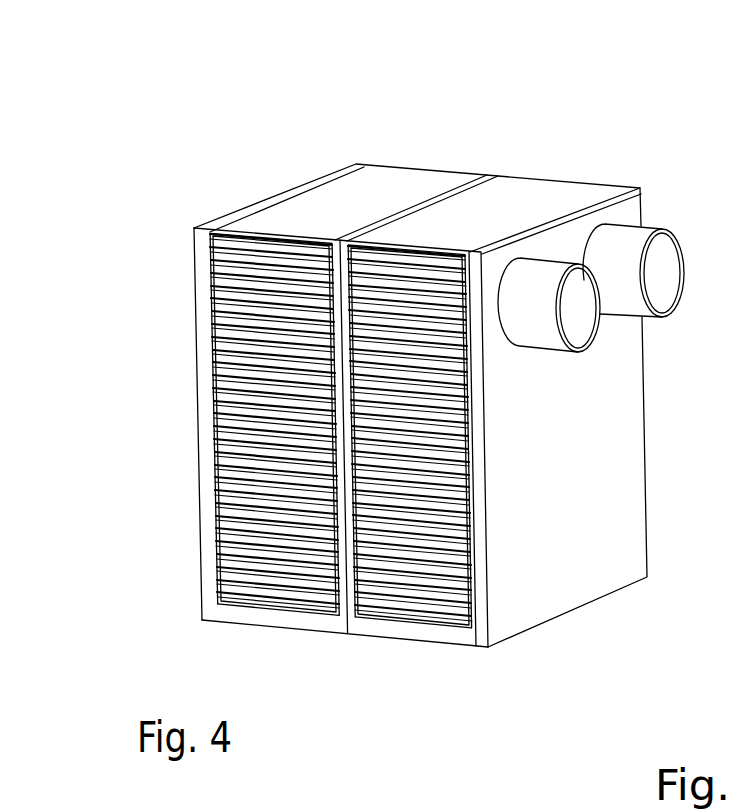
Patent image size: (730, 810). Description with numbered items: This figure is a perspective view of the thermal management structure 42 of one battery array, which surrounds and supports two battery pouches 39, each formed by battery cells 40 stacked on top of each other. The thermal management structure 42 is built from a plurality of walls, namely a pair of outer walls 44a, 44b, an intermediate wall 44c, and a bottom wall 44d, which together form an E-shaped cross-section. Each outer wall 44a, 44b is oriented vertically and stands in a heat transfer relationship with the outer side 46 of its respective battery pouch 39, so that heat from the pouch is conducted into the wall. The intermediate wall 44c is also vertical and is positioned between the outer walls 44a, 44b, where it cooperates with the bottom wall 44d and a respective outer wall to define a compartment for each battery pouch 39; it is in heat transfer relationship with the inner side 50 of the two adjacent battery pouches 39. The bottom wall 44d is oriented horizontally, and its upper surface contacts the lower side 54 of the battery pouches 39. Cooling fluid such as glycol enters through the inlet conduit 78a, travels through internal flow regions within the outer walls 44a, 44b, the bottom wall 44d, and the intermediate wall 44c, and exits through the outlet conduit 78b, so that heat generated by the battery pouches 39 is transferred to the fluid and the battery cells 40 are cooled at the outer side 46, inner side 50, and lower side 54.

The battery pouch 39 is at (257, 547).
The battery cell 40 is at (420, 410).
The thermal management structure 42 is at (335, 158).
The outer wall 44a is at (634, 461).
The outer wall 44b is at (186, 247).
The intermediate wall 44c is at (347, 240).
The bottom wall 44d is at (236, 630).
The outer side 46 is at (202, 393).
The inner side 50 is at (300, 438).
The lower side 54 is at (280, 619).
The inlet conduit 78a is at (548, 325).
The outlet conduit 78b is at (608, 222).